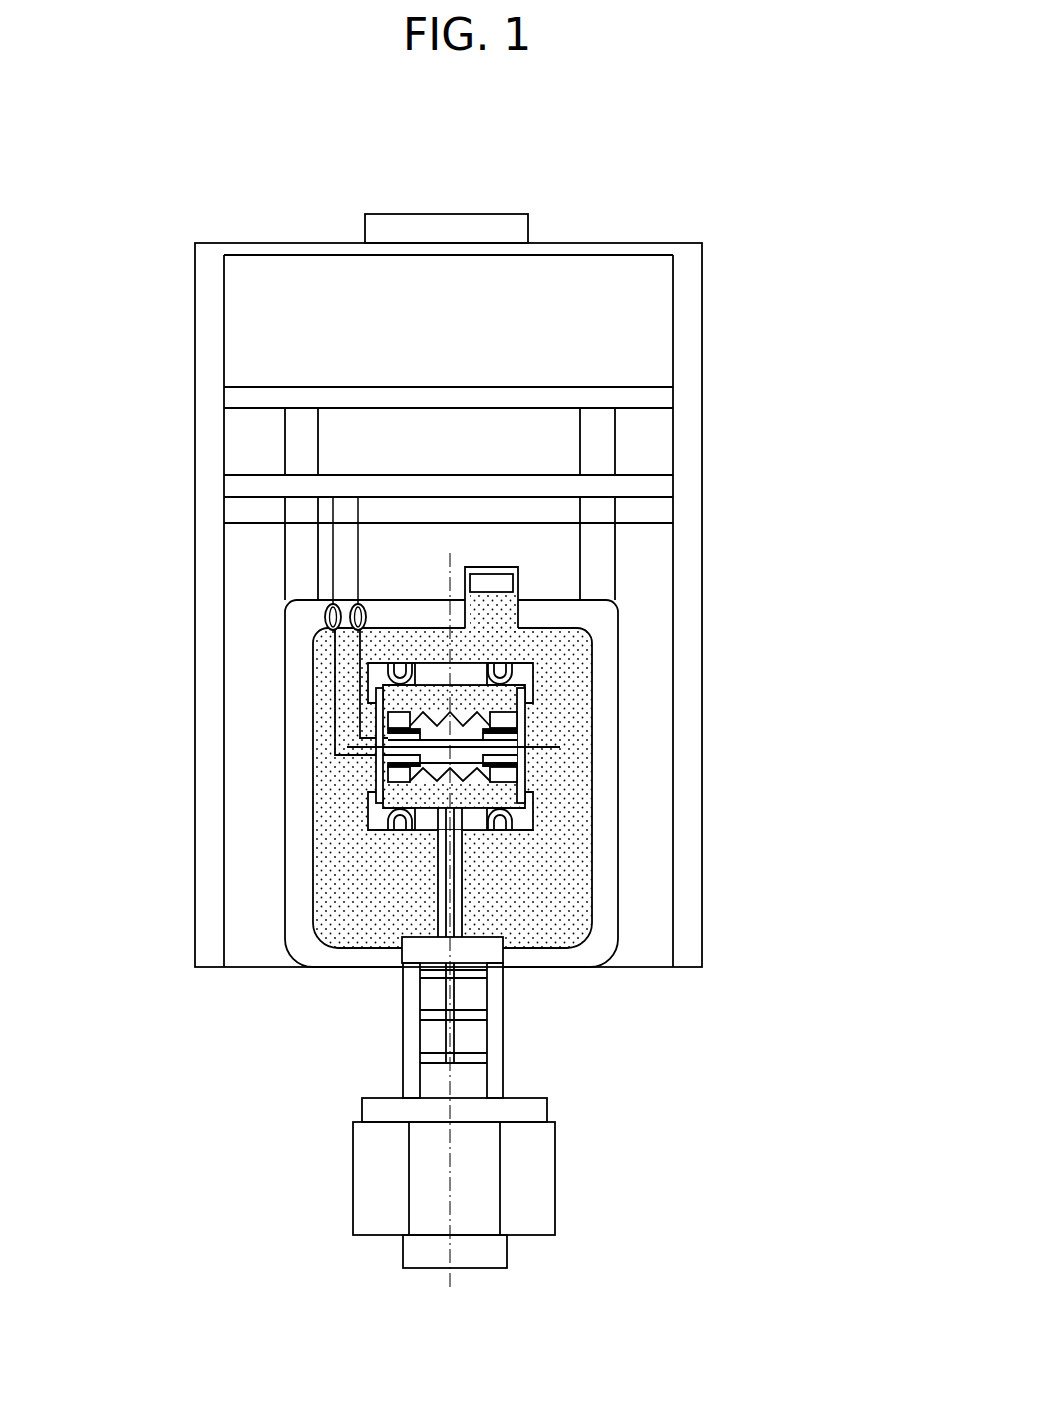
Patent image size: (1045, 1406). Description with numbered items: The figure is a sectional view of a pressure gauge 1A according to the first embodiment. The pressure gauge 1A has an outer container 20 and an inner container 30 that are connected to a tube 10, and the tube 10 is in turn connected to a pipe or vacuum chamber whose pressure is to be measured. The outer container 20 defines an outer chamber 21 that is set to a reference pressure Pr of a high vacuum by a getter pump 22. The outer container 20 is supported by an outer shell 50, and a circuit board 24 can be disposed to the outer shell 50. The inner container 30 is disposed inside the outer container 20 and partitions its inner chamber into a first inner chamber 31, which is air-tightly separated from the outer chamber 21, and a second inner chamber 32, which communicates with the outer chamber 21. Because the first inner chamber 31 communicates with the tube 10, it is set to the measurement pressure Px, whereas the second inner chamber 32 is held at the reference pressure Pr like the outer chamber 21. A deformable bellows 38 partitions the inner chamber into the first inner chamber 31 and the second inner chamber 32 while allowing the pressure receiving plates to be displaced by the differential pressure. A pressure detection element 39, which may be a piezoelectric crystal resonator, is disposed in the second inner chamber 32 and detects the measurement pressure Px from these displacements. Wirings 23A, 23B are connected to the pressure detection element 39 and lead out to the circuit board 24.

The pressure gauge 1A is at (760, 203).
The outer shell 50 is at (702, 343).
The circuit board 24 is at (403, 472).
The getter pump 22 is at (490, 580).
The outer container 20 is at (623, 850).
The outer chamber 21 is at (335, 782).
The wiring 23A is at (335, 666).
The wiring 23B is at (360, 707).
The inner container 30 is at (390, 853).
The second inner chamber 32 is at (483, 720).
The pressure detection element 39 is at (500, 738).
The bellows 38 is at (430, 760).
The first inner chamber 31 is at (500, 787).
The tube 10 is at (507, 1253).